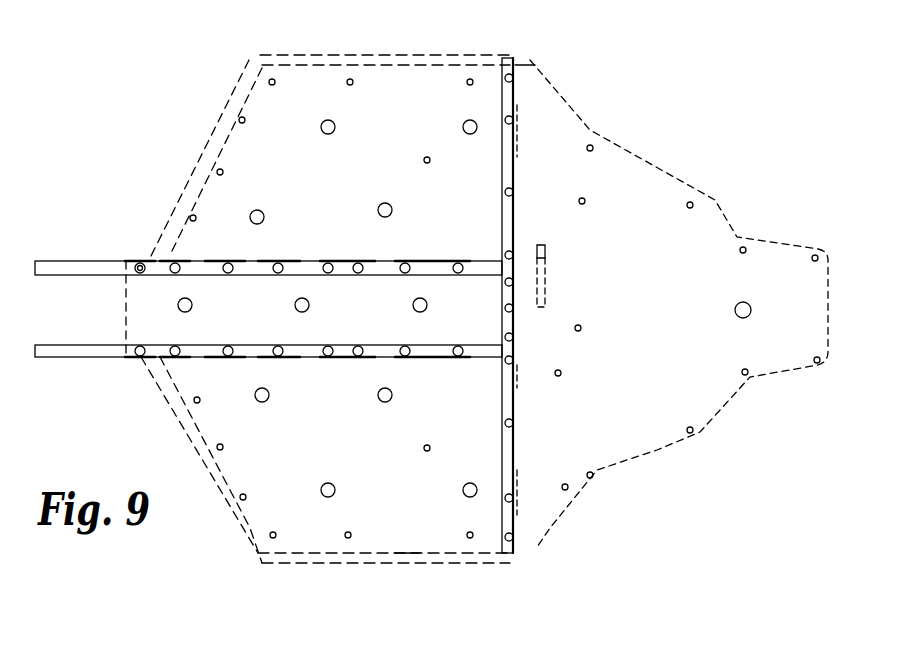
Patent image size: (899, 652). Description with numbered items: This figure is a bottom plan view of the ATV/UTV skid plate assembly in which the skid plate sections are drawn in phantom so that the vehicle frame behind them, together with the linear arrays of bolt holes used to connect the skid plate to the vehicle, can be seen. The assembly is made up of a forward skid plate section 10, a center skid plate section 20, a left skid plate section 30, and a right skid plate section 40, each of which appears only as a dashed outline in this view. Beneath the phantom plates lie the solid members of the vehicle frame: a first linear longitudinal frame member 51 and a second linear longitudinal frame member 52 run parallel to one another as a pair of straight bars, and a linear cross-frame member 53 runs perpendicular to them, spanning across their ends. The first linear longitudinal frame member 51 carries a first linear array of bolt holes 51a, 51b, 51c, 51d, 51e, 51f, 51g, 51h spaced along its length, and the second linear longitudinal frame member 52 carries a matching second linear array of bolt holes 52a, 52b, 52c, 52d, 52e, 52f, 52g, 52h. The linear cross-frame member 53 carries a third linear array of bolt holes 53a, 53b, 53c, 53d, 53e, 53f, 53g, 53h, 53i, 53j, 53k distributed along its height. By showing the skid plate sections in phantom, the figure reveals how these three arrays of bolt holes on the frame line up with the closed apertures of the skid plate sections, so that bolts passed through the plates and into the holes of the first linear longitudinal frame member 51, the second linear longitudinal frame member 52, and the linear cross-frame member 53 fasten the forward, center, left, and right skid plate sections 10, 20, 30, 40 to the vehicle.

The forward skid plate section 10 is at (798, 343).
The center skid plate section 20 is at (138, 305).
The left skid plate section 30 is at (262, 84).
The right skid plate section 40 is at (408, 525).
The first linear longitudinal frame member 51 is at (53, 357).
The bolt hole 51a is at (140, 357).
The bolt hole 51b is at (176, 357).
The bolt hole 51c is at (228, 357).
The bolt hole 51d is at (278, 357).
The bolt hole 51e is at (328, 357).
The bolt hole 51f is at (358, 357).
The bolt hole 51g is at (405, 357).
The bolt hole 51h is at (458, 357).
The second linear longitudinal frame member 52 is at (53, 262).
The bolt hole 52a is at (140, 262).
The bolt hole 52b is at (175, 262).
The bolt hole 52c is at (228, 262).
The bolt hole 52d is at (279, 262).
The bolt hole 52e is at (328, 262).
The bolt hole 52f is at (358, 262).
The bolt hole 52g is at (405, 262).
The bolt hole 52h is at (458, 262).
The linear cross-frame member 53 is at (503, 442).
The bolt hole 53a is at (504, 537).
The bolt hole 53b is at (504, 498).
The bolt hole 53c is at (504, 423).
The bolt hole 53d is at (504, 360).
The bolt hole 53e is at (504, 337).
The bolt hole 53f is at (504, 308).
The bolt hole 53g is at (504, 282).
The bolt hole 53h is at (504, 255).
The bolt hole 53i is at (504, 192).
The bolt hole 53j is at (504, 120).
The bolt hole 53k is at (504, 78).